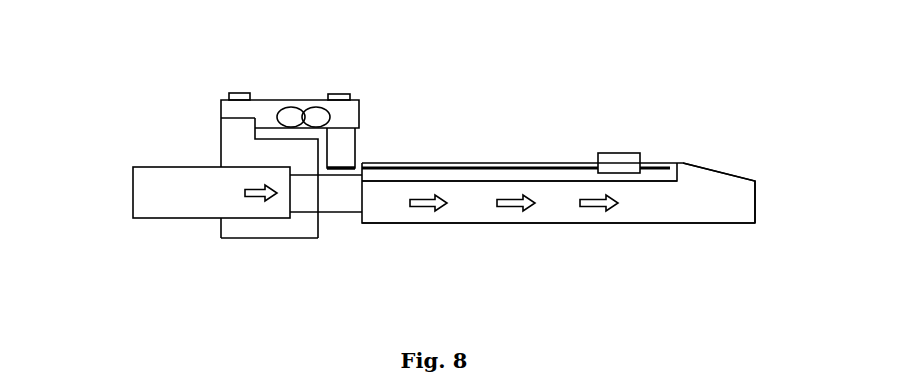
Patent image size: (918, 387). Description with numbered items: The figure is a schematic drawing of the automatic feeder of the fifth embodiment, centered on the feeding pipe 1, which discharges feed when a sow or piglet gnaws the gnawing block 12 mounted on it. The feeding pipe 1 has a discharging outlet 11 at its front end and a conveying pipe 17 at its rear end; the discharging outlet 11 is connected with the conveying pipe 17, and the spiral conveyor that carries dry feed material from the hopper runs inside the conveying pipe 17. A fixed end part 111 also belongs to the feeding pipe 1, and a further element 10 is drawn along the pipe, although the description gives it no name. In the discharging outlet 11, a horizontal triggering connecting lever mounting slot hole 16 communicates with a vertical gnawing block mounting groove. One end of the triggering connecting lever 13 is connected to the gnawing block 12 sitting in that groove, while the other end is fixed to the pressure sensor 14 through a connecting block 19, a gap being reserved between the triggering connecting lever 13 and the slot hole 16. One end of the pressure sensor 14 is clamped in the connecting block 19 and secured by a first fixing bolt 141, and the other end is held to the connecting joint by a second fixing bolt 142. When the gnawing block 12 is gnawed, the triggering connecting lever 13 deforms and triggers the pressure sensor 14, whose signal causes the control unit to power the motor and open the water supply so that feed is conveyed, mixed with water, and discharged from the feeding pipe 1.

The feeding pipe 1 is at (601, 216).
The air duct 10 is at (558, 213).
The discharging outlet 11 is at (688, 200).
The gnawing block 12 is at (688, 142).
The triggering connecting lever 13 is at (516, 132).
The pressure sensor 14 is at (294, 86).
The first fixing bolt 141 is at (350, 97).
The second fixing bolt 142 is at (199, 72).
The triggering connecting lever mounting slot hole 16 is at (235, 148).
The conveying pipe 17 is at (165, 211).
The connecting block 19 is at (343, 142).
The fixed end part 111 is at (364, 219).